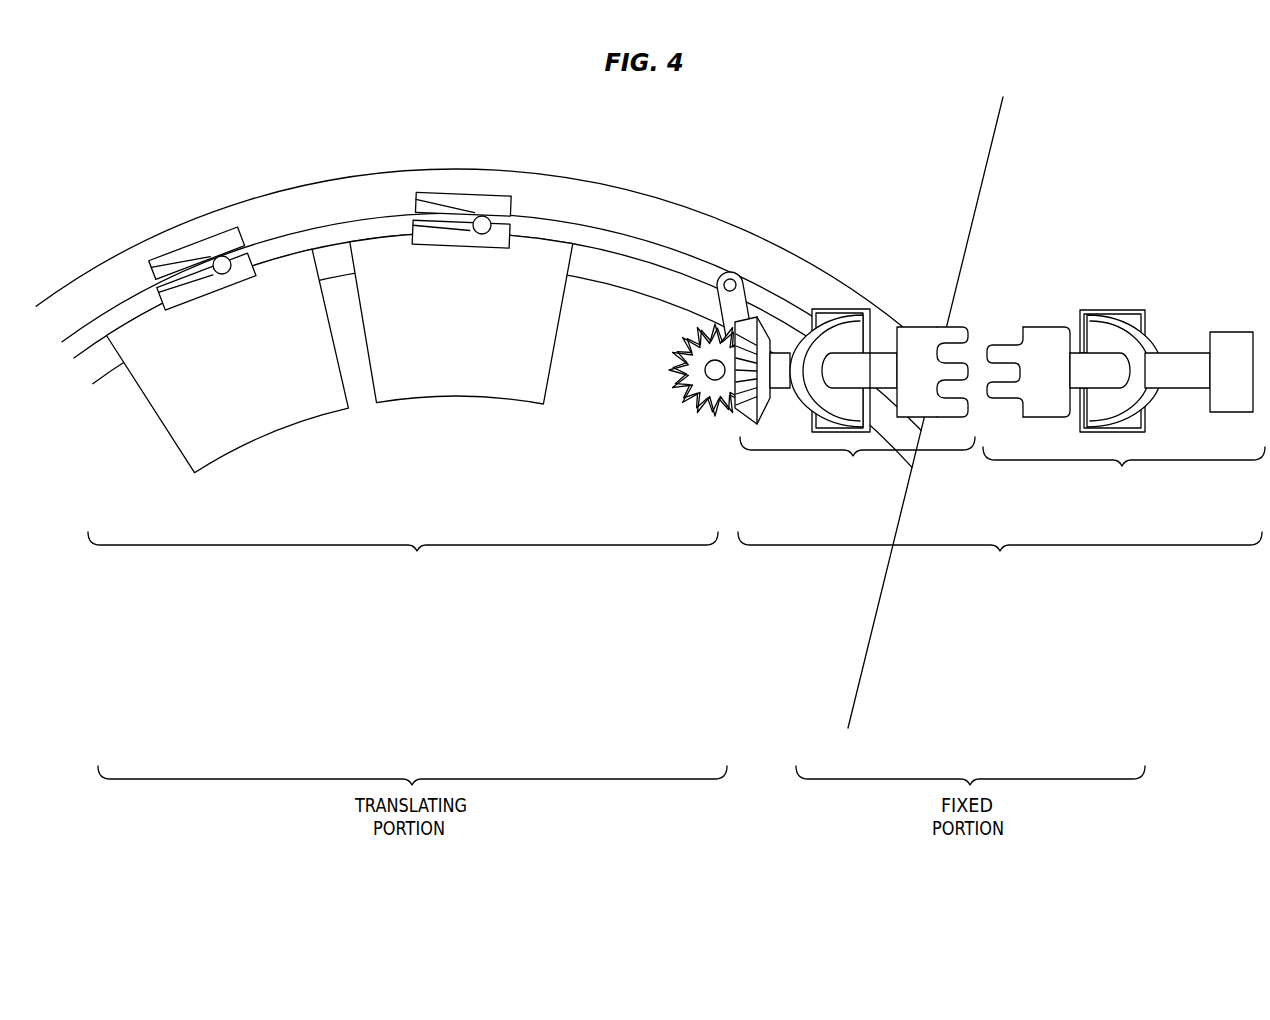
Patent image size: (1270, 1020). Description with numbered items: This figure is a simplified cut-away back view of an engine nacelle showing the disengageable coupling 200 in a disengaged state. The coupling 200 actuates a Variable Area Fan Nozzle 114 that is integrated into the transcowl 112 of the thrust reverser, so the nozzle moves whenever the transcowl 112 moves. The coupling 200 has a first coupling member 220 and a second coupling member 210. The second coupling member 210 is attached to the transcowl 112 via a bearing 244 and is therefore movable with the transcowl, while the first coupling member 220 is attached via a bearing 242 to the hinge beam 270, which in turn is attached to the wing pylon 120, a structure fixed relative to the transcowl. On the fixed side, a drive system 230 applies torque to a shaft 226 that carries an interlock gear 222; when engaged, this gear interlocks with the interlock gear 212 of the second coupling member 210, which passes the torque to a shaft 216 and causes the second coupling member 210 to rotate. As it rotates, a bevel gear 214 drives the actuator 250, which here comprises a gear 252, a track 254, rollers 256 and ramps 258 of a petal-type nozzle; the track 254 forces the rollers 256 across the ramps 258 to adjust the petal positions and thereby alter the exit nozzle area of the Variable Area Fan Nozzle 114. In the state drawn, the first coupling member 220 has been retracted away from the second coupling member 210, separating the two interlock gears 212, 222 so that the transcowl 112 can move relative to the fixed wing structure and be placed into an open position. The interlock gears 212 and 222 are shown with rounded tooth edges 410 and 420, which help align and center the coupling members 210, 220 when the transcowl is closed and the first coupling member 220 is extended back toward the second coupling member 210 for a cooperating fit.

The transcowl 112 is at (643, 190).
The track 254 is at (650, 243).
The Variable Area Fan Nozzle 114 is at (165, 424).
The rollers 256 is at (222, 256).
The ramps 258 is at (244, 236).
The gear 252 is at (678, 362).
The bevel gear 214 is at (742, 420).
The bearing 244 is at (830, 312).
The shaft 216 is at (880, 352).
The interlock gear 212 is at (924, 327).
The rounded tooth edges 410 is at (972, 338).
The rounded tooth edges 420 is at (995, 347).
The interlock gear 222 is at (1048, 327).
The bearing 242 is at (1113, 333).
The hinge beam 270 is at (1146, 430).
The shaft 226 is at (1187, 353).
The drive system 230 is at (1233, 331).
The wing pylon 120 is at (985, 178).
The second coupling member 210 is at (857, 461).
The first coupling member 220 is at (1124, 472).
The actuator 250 is at (403, 554).
The disengageable coupling 200 is at (1000, 554).